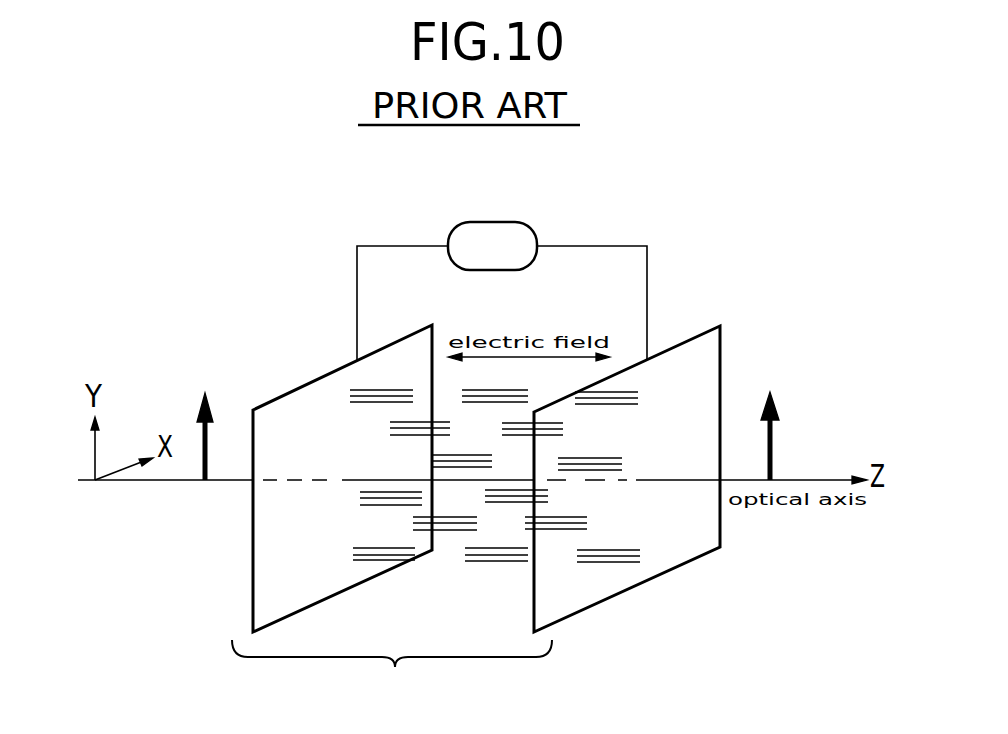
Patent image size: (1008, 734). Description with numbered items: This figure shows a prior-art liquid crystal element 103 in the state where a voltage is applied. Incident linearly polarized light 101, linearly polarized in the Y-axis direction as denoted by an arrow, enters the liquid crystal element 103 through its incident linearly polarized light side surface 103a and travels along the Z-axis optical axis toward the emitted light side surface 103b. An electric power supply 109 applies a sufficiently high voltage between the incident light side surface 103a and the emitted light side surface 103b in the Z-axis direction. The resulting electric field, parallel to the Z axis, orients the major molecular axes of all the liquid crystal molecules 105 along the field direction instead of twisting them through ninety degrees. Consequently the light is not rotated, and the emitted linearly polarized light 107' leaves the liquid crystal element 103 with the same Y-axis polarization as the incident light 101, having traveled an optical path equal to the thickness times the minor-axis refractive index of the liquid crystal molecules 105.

The electric power supply 109 is at (500, 221).
The incident linearly polarized light 101 is at (217, 393).
The emitted linearly polarized light 107' is at (817, 409).
The liquid crystal element 103 is at (392, 673).
The incident linearly polarized light side surface 103a is at (263, 533).
The emitted light side surface 103b is at (670, 553).
The liquid crystal molecules 105 is at (474, 572).